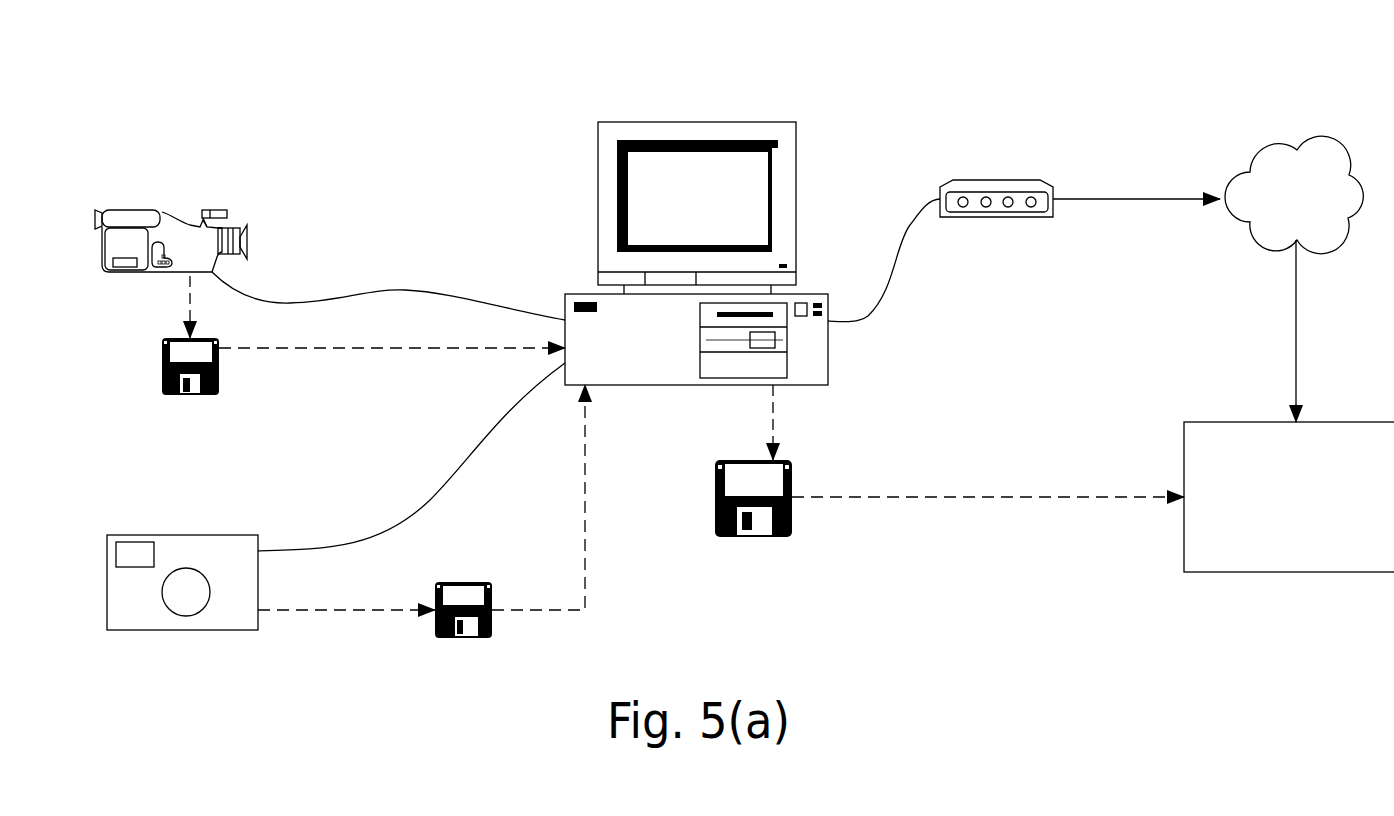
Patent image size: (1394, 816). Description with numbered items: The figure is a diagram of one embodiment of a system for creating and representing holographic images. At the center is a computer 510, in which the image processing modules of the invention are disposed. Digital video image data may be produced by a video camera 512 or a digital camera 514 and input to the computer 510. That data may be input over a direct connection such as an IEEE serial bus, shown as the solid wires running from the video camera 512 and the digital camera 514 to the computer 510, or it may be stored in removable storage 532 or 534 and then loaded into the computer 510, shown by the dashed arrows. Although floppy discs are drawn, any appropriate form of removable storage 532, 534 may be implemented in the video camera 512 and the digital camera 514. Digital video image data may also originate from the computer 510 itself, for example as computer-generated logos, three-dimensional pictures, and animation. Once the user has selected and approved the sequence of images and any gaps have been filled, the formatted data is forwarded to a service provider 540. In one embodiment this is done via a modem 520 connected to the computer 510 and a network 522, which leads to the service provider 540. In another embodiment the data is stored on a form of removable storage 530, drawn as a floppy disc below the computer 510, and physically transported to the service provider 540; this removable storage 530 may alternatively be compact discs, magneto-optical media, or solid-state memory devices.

The computer 510 is at (750, 122).
The video camera 512 is at (122, 217).
The digital camera 514 is at (140, 535).
The modem 520 is at (996, 180).
The network 522 is at (1316, 138).
The removable storage 530 is at (792, 466).
The removable storage 532 is at (162, 367).
The removable storage 534 is at (463, 582).
The service provider 540 is at (1296, 572).